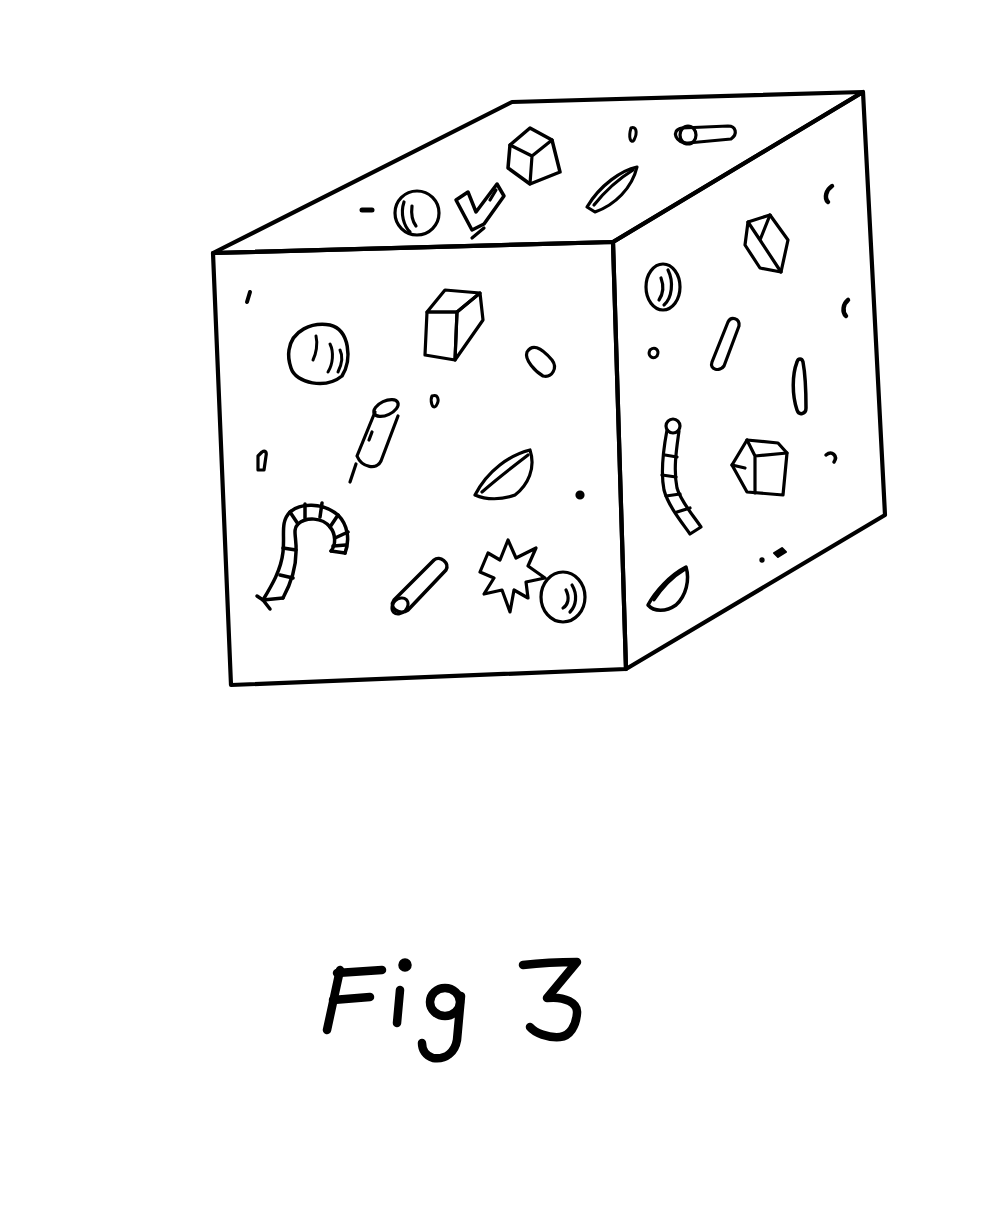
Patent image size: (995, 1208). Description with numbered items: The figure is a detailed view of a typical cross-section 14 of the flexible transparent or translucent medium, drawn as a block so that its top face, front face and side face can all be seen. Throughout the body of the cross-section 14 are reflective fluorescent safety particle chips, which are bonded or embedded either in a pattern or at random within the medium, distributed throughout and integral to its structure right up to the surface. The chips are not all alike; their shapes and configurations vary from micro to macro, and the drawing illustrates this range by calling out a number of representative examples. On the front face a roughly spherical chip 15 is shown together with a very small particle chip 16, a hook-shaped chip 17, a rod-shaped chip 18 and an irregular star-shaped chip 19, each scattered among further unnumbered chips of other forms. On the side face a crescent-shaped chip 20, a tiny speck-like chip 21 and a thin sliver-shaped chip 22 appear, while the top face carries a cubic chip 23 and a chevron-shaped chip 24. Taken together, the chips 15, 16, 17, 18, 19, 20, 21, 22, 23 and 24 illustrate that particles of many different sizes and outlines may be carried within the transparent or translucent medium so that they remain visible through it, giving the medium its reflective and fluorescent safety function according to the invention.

The cross-section of the flexible transparent or translucent medium 14 is at (375, 335).
The reflective fluorescent safety particle chip 15 is at (314, 352).
The reflective fluorescent safety particle chip 16 is at (256, 463).
The reflective fluorescent safety particle chip 17 is at (280, 555).
The reflective fluorescent safety particle chip 18 is at (427, 577).
The reflective fluorescent safety particle chip 19 is at (519, 572).
The reflective fluorescent safety particle chip 20 is at (668, 602).
The reflective fluorescent safety particle chip 21 is at (779, 553).
The reflective fluorescent safety particle chip 22 is at (797, 412).
The reflective fluorescent safety particle chip 23 is at (538, 152).
The reflective fluorescent safety particle chip 24 is at (470, 210).